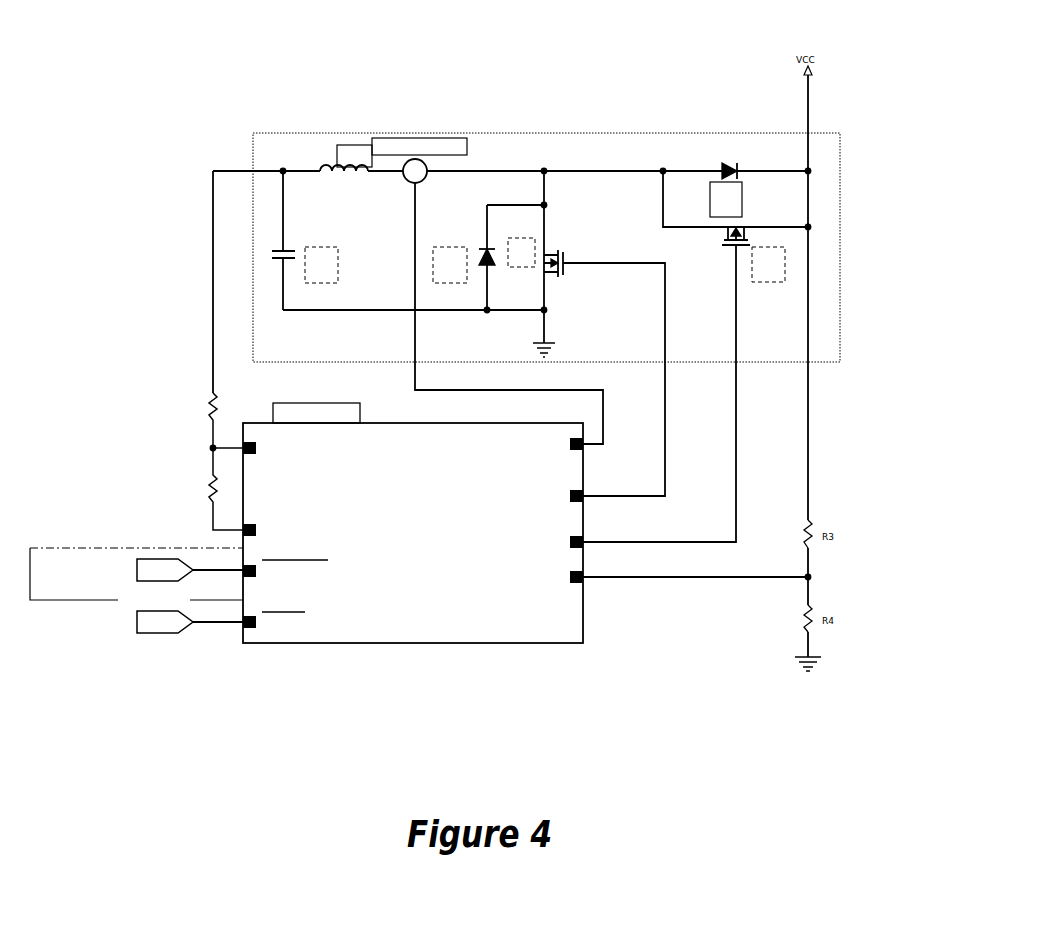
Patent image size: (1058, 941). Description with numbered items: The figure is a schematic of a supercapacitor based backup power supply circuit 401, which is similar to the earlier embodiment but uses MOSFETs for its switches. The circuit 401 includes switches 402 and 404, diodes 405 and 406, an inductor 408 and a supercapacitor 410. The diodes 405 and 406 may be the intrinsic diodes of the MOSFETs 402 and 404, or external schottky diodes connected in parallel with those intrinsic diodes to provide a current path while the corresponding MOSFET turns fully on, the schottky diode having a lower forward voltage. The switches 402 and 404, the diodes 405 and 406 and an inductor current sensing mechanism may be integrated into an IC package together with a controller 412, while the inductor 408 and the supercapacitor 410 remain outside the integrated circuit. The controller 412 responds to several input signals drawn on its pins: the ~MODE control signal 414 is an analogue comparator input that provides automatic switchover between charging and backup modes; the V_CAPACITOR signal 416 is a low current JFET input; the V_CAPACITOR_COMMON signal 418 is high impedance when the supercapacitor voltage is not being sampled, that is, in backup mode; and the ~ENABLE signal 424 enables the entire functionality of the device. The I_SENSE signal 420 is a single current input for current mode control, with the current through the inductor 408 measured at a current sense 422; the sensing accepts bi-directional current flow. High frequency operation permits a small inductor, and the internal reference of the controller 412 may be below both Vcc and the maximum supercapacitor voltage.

The supercapacitor based backup power supply circuit 401 is at (468, 134).
The switch 402 is at (744, 226).
The switch 404 is at (563, 250).
The diode 405 is at (726, 158).
The diode 406 is at (476, 250).
The inductor 408 is at (329, 166).
The supercapacitor 410 is at (272, 258).
The controller 412 is at (412, 643).
The ~MODE control signal 414 is at (252, 632).
The V_CAPACITOR signal 416 is at (243, 433).
The V_CAPACITOR_COMMON signal 418 is at (243, 515).
The I_SENSE signal 420 is at (583, 447).
The current sense 422 is at (413, 159).
The ~ENABLE signal 424 is at (243, 560).